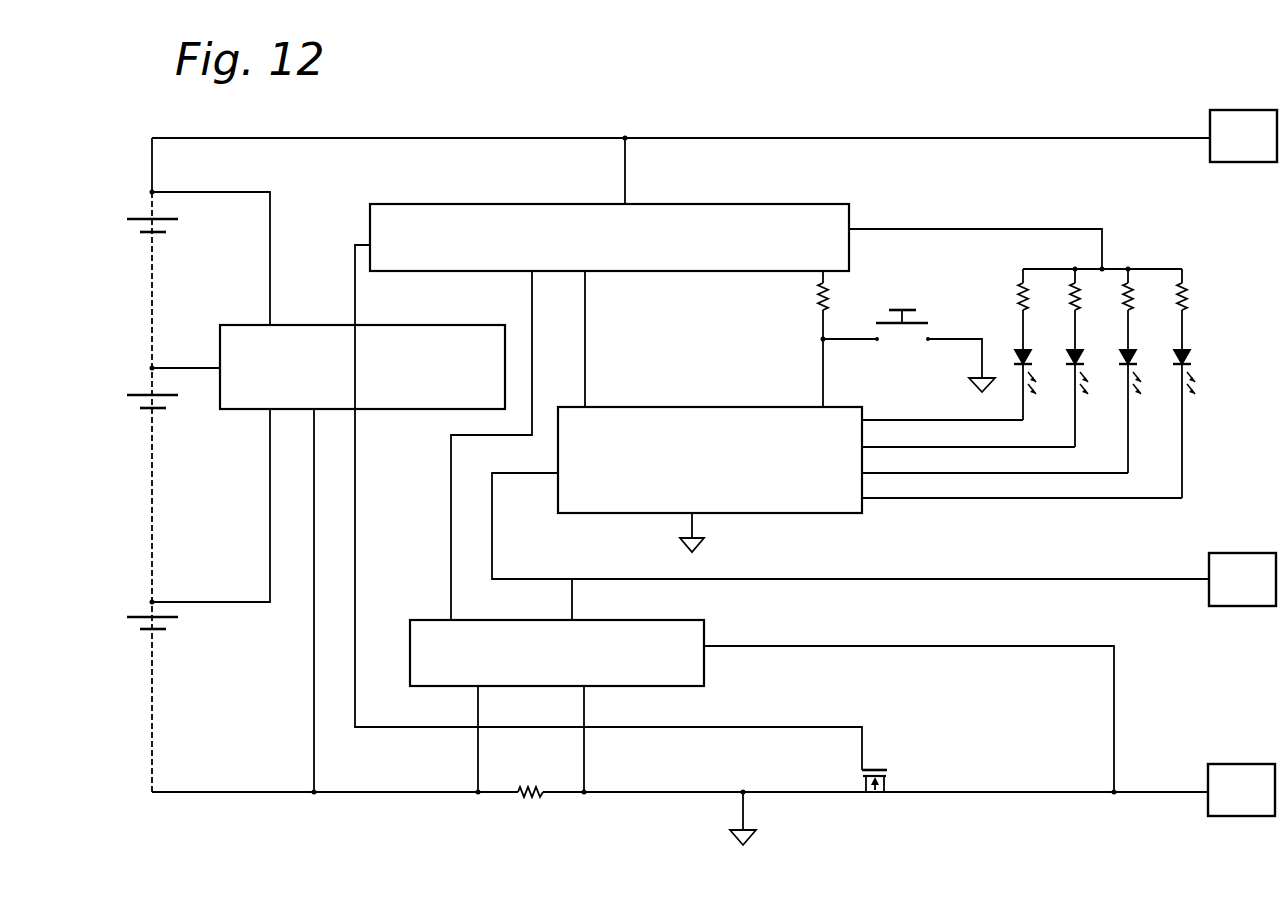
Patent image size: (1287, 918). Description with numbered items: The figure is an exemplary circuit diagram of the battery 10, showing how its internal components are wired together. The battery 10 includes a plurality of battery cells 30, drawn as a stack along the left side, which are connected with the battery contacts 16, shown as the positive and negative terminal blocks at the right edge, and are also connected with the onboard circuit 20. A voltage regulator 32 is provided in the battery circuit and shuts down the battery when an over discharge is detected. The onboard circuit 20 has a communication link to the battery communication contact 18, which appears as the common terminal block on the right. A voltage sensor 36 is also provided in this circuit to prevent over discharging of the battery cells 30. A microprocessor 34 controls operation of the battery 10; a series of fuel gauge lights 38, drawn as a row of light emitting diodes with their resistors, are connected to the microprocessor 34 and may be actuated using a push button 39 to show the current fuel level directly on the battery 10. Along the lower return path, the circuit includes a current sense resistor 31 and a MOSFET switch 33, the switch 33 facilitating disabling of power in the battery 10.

The battery 10 is at (735, 127).
The battery contacts 16 is at (1228, 118).
The battery communication contact 18 is at (1233, 558).
The onboard circuit 20 is at (705, 677).
The battery cells 30 is at (140, 240).
The current sense resistor 31 is at (530, 782).
The voltage regulator 32 is at (828, 211).
The MOSFET switch 33 is at (878, 770).
The microprocessor 34 is at (677, 411).
The voltage sensor 36 is at (291, 337).
The fuel gauge lights 38 is at (1190, 348).
The push button 39 is at (923, 312).